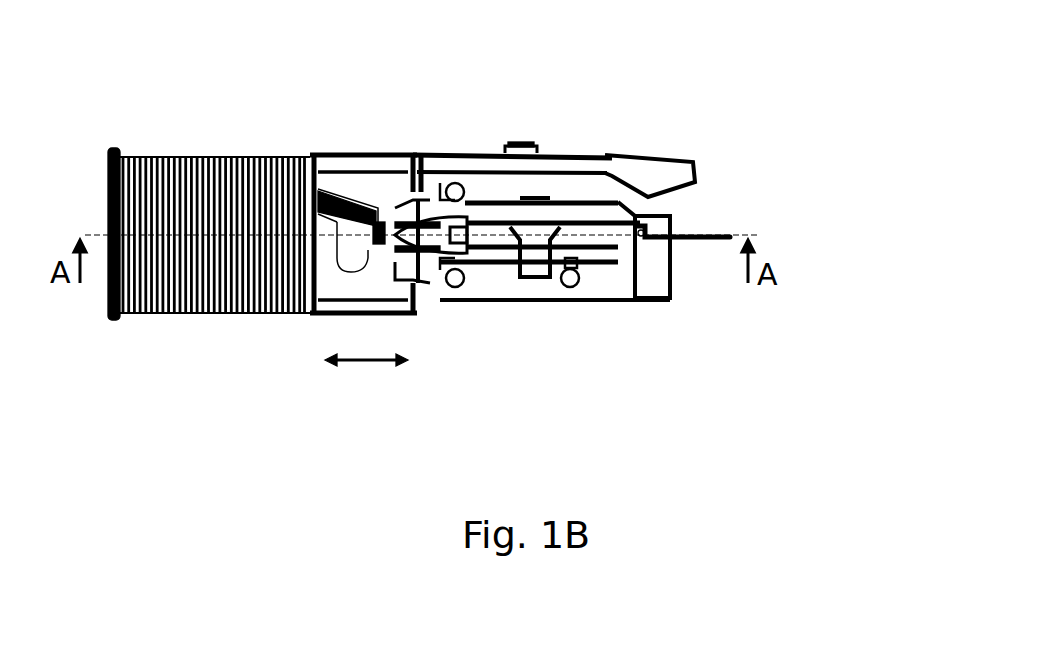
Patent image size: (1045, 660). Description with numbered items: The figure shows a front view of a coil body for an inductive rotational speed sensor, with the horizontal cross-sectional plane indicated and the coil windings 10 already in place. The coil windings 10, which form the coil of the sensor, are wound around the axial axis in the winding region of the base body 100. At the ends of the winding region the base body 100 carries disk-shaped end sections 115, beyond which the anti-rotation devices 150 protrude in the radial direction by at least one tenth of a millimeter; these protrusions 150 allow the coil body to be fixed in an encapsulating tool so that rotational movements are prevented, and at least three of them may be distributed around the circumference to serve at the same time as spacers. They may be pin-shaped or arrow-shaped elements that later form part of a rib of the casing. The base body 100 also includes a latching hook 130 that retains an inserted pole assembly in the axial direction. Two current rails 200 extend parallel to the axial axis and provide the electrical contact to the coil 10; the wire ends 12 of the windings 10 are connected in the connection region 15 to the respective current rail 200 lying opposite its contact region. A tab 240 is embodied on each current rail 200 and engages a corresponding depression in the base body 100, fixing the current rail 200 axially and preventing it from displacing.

The coil windings 10 is at (175, 158).
The wire ends 12 is at (423, 276).
The connection region 15 is at (366, 378).
The base body 100 is at (358, 157).
The disk-shaped end sections 115 is at (118, 322).
The latching hook 130 is at (683, 175).
The anti-rotation devices 150 is at (457, 183).
The current rails 200 is at (598, 205).
The tab 240 is at (538, 268).